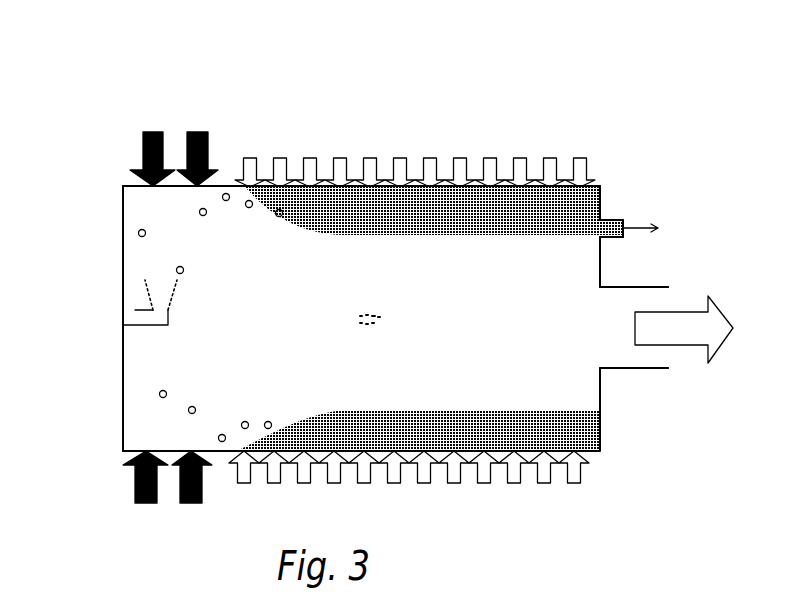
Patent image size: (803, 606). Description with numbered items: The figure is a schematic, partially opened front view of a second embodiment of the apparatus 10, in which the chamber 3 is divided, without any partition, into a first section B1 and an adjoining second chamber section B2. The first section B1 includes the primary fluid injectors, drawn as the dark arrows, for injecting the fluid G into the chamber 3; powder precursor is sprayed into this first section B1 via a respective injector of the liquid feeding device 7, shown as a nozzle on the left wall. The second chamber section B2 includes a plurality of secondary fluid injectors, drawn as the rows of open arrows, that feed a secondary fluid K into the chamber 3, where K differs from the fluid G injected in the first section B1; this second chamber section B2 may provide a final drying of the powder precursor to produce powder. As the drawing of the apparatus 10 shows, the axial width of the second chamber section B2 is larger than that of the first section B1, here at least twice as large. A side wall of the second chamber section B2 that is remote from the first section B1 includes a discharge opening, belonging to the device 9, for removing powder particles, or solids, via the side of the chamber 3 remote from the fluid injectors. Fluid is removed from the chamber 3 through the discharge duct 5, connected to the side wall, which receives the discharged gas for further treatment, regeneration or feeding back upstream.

The spray drying apparatus 10 is at (130, 88).
The chamber 3 is at (117, 466).
The liquid feeding device 7 is at (130, 313).
The fluid G is at (170, 321).
The first section B1 is at (237, 105).
The secondary fluid K is at (395, 160).
The second chamber section B2 is at (530, 120).
The device for removing powder particles 9 is at (627, 203).
The discharge duct 5 is at (628, 370).